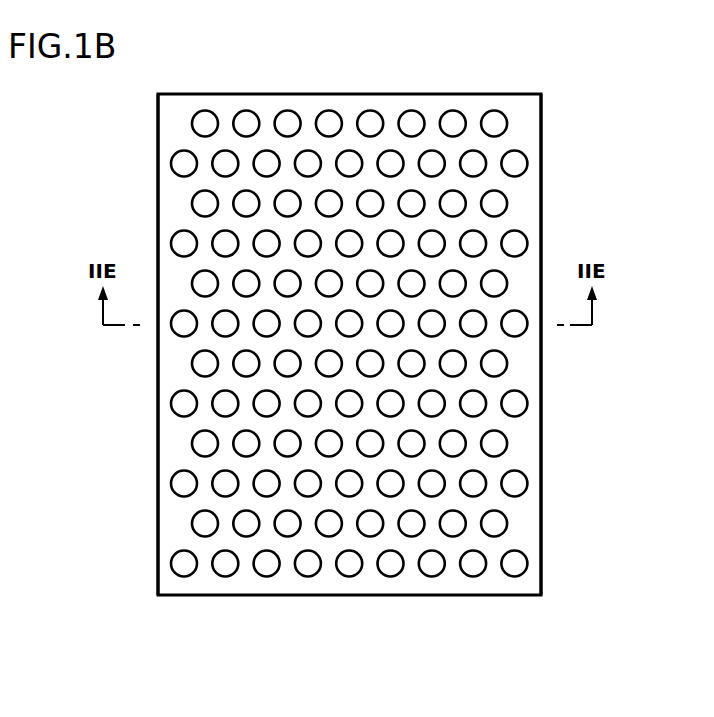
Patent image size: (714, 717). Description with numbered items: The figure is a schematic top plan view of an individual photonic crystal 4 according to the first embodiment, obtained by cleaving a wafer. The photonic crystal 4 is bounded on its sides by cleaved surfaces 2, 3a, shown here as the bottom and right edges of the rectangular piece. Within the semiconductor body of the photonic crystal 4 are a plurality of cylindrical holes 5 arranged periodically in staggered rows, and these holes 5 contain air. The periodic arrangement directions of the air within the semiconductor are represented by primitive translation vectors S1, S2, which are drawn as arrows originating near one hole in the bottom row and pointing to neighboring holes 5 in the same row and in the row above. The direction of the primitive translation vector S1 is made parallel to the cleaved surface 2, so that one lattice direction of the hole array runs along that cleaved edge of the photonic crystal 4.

The cleaved surface 2 is at (380, 595).
The cleaved surface 3a is at (541, 108).
The photonic crystal 4 is at (158, 130).
The cylindrical holes 5 is at (524, 172).
The primitive translation vector S1 is at (467, 558).
The primitive translation vector S2 is at (456, 531).